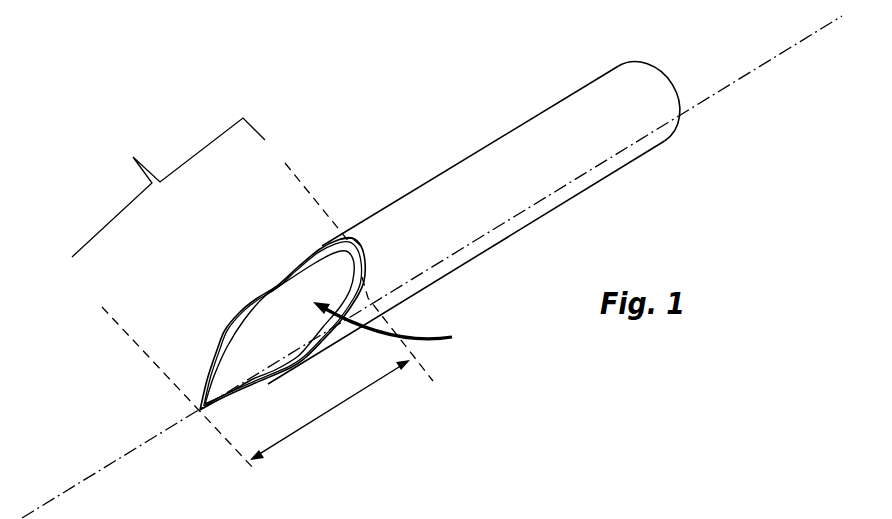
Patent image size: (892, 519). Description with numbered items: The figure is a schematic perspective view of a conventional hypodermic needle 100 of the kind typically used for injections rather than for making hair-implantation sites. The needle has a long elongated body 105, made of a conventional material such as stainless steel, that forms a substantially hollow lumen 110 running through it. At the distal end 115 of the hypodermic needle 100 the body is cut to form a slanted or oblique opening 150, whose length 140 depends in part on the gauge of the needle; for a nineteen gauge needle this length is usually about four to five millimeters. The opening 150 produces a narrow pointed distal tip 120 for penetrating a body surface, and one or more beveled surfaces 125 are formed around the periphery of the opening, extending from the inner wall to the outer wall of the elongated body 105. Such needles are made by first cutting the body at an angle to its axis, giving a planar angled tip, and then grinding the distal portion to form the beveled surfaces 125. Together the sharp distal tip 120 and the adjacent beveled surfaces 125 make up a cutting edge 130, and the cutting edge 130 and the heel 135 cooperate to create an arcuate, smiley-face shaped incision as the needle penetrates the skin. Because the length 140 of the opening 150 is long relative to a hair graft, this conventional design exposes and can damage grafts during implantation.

The hypodermic needle 100 is at (314, 74).
The elongated body 105 is at (537, 115).
The lumen 110 is at (288, 346).
The distal end 115 is at (252, 294).
The distal tip 120 is at (200, 410).
The beveled surface 125 is at (223, 333).
The cutting edge 130 is at (248, 390).
The heel 135 is at (348, 256).
The length of the opening 140 is at (330, 410).
The slanted opening 150 is at (410, 322).